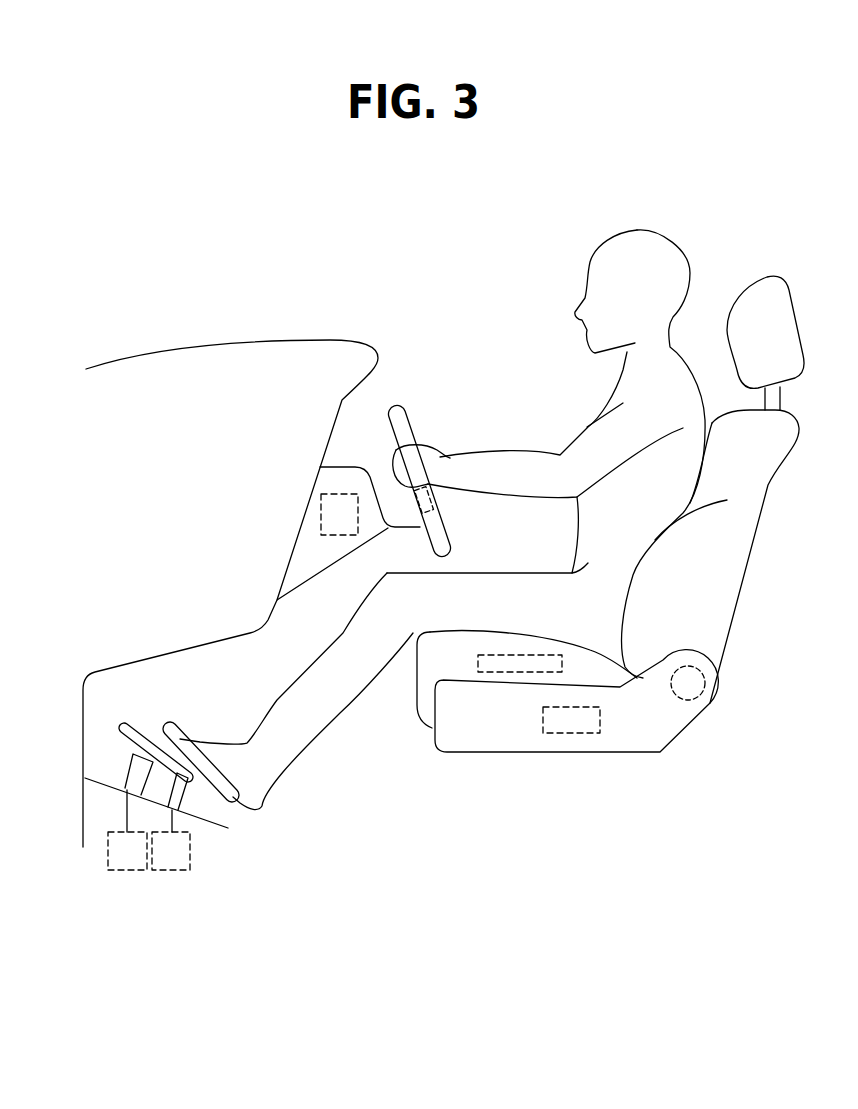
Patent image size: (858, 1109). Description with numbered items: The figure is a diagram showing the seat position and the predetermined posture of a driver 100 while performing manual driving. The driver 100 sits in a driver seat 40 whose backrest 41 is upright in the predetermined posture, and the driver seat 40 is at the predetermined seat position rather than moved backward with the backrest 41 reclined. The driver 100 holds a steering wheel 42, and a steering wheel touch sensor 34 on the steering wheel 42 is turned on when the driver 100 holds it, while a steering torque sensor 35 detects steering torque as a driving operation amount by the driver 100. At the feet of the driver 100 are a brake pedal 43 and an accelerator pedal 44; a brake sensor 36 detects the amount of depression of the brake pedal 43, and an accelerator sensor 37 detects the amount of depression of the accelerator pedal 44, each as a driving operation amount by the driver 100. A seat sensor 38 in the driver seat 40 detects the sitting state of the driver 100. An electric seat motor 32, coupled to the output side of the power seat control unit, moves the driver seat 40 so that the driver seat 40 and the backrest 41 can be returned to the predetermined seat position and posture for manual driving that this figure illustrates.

The driver 100 is at (637, 226).
The electric seat motor 32 is at (570, 734).
The steering wheel touch sensor 34 is at (440, 502).
The steering torque sensor 35 is at (335, 536).
The brake sensor 36 is at (125, 873).
The accelerator sensor 37 is at (168, 873).
The seat sensor 38 is at (503, 673).
The driver seat 40 is at (603, 753).
The backrest 41 is at (720, 582).
The steering wheel 42 is at (408, 424).
The brake pedal 43 is at (134, 730).
The accelerator pedal 44 is at (207, 768).